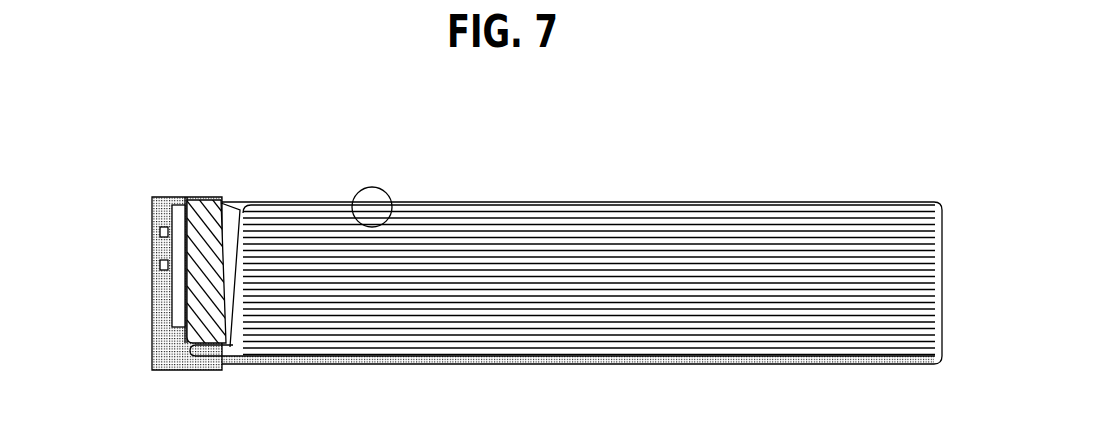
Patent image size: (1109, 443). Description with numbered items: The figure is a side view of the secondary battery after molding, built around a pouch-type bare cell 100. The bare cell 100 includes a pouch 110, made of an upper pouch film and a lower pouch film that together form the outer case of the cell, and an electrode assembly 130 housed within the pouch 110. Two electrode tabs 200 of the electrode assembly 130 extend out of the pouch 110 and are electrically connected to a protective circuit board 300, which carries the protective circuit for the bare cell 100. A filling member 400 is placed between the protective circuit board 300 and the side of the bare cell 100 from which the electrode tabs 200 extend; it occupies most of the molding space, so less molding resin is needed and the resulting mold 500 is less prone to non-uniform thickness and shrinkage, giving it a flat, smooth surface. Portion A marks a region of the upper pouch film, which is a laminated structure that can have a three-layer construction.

The pouch-type bare cell 100 is at (736, 202).
The pouch 110 is at (493, 205).
The electrode assembly 130 is at (605, 230).
The electrode tabs 200 is at (153, 348).
The protective circuit board 300 is at (178, 197).
The filling member 400 is at (207, 197).
The mold 500 is at (170, 297).
The portion "A" A is at (360, 190).